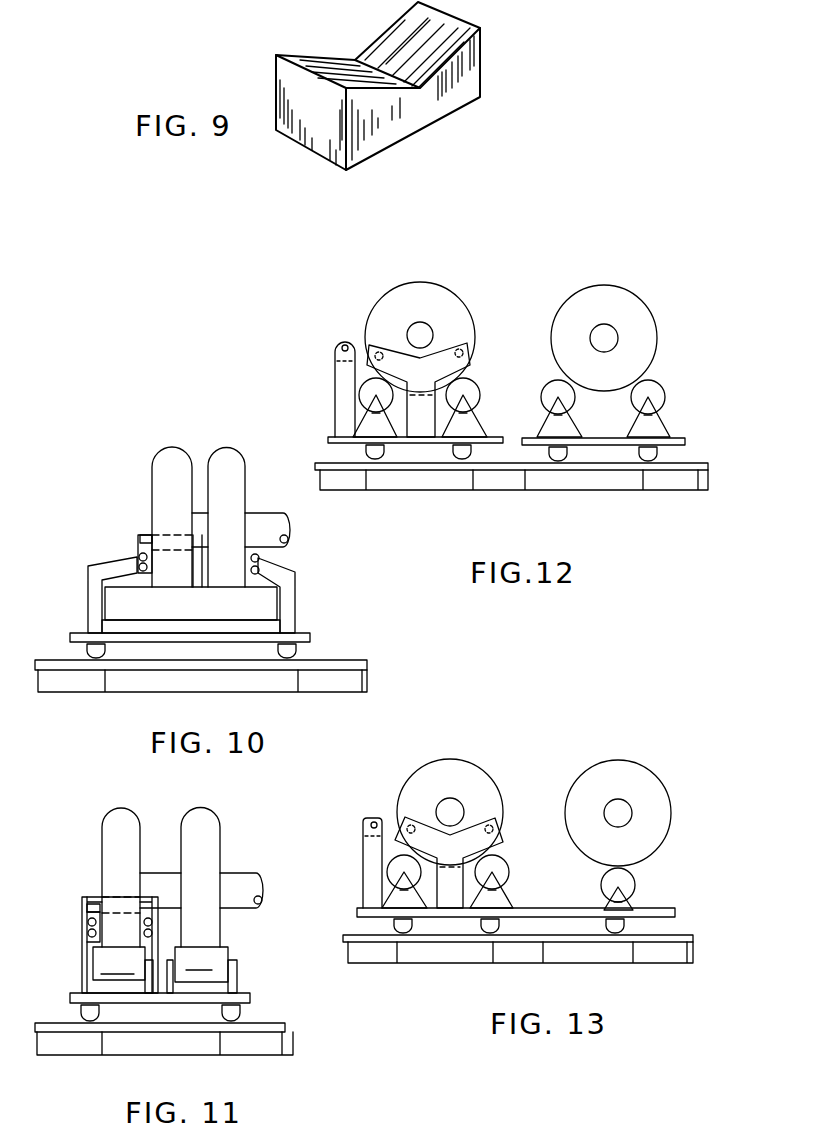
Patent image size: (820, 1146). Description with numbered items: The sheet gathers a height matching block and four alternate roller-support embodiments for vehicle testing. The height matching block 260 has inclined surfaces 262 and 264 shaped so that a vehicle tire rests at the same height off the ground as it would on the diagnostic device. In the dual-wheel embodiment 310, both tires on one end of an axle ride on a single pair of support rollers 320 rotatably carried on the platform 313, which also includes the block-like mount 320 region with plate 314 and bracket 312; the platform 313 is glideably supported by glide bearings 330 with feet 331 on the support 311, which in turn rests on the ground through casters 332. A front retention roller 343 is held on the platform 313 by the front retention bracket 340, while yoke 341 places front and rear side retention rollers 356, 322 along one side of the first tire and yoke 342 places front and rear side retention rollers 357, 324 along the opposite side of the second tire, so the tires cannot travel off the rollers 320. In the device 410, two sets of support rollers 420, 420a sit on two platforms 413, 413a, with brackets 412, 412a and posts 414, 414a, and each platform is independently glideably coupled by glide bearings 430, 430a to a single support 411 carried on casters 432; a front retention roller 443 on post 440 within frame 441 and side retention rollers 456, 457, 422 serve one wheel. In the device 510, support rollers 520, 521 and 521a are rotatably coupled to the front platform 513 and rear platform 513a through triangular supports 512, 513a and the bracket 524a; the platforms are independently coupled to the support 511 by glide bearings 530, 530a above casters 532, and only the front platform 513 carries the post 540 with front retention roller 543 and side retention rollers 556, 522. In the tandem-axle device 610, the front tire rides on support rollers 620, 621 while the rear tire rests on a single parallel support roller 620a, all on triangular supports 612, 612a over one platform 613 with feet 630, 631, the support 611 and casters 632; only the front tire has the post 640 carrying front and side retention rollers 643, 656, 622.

In FIG. 9, the height matching block 260 is at (437, 116).
In FIG. 9, the inclined surface 262 is at (325, 62).
In FIG. 9, the inclined surface 264 is at (466, 22).
In FIG. 10, the support assembly 310 is at (120, 458).
In FIG. 10, the support 311 is at (357, 663).
In FIG. 10, the left bracket 312 is at (81, 595).
In FIG. 10, the platform 313 is at (300, 639).
In FIG. 10, the mounting plate 314 is at (290, 624).
In FIG. 10, the support rollers 320 is at (262, 604).
In FIG. 10, the rear side retention roller 322 is at (138, 562).
In FIG. 10, the rear side retention roller 324 is at (262, 569).
In FIG. 10, the glide bearings 330 is at (82, 639).
In FIG. 10, the foot 331 is at (85, 656).
In FIG. 10, the casters 332 is at (346, 690).
In FIG. 10, the front retention bracket 340 is at (141, 533).
In FIG. 10, the yoke 341 is at (88, 584).
In FIG. 10, the yoke 342 is at (287, 586).
In FIG. 10, the front retention roller 343 is at (147, 536).
In FIG. 10, the front side retention roller 356 is at (138, 555).
In FIG. 10, the front side retention roller 357 is at (260, 557).
In FIG. 11, the device 410 is at (64, 833).
In FIG. 11, the support 411 is at (290, 1024).
In FIG. 11, the bracket 412 is at (87, 969).
In FIG. 11, the bracket 412a is at (170, 985).
In FIG. 11, the platform 413 is at (80, 997).
In FIG. 11, the platform 413a is at (246, 995).
In FIG. 11, the post 414 is at (146, 988).
In FIG. 11, the post 414a is at (237, 968).
In FIG. 11, the support rollers 420 is at (119, 963).
In FIG. 11, the support rollers 420a is at (201, 966).
In FIG. 11, the rear side retention roller 422 is at (88, 930).
In FIG. 11, the glide bearings 430 is at (81, 1008).
In FIG. 11, the glide bearings 430a is at (242, 1010).
In FIG. 11, the guide rail 432 is at (85, 1053).
In FIG. 11, the clamp post 440 is at (87, 905).
In FIG. 11, the clamp frame 441 is at (82, 942).
In FIG. 11, the front retention roller 443 is at (94, 897).
In FIG. 11, the front side retention roller 456 is at (88, 920).
In FIG. 11, the front side retention roller 457 is at (162, 835).
In FIG. 12, the device 510 is at (578, 260).
In FIG. 12, the support 511 is at (318, 467).
In FIG. 12, the triangular roller support 512 is at (358, 425).
In FIG. 12, the front platform 513 is at (490, 432).
In FIG. 12, the rear platform 513a is at (678, 432).
In FIG. 12, the support roller 520 is at (362, 392).
In FIG. 12, the support roller 521 is at (466, 392).
In FIG. 12, the support roller 521a is at (655, 392).
In FIG. 12, the rear side retention roller 522 is at (466, 350).
In FIG. 12, the Y-shaped bracket 524a is at (538, 358).
In FIG. 12, the glide bearings 530 is at (345, 446).
In FIG. 12, the glide bearings 530a is at (545, 453).
In FIG. 12, the guide rail 532 is at (516, 489).
In FIG. 12, the clamp post 540 is at (340, 365).
In FIG. 12, the front retention roller 543 is at (347, 343).
In FIG. 12, the front side retention roller 556 is at (374, 352).
In FIG. 13, the device 610 is at (594, 726).
In FIG. 13, the base plate 611 is at (696, 944).
In FIG. 13, the triangular roller support 612 is at (392, 890).
In FIG. 13, the triangular roller support 612a is at (628, 903).
In FIG. 13, the platform 613 is at (672, 913).
In FIG. 13, the support roller 620 is at (390, 870).
In FIG. 13, the single support roller 620a is at (630, 880).
In FIG. 13, the support roller 621 is at (495, 866).
In FIG. 13, the side retention roller 622 is at (500, 818).
In FIG. 13, the foot 630 is at (625, 926).
In FIG. 13, the foot 631 is at (608, 932).
In FIG. 13, the guide rail 632 is at (536, 961).
In FIG. 13, the clamp post 640 is at (362, 848).
In FIG. 13, the front retention roller 643 is at (370, 818).
In FIG. 13, the side retention roller 656 is at (400, 815).